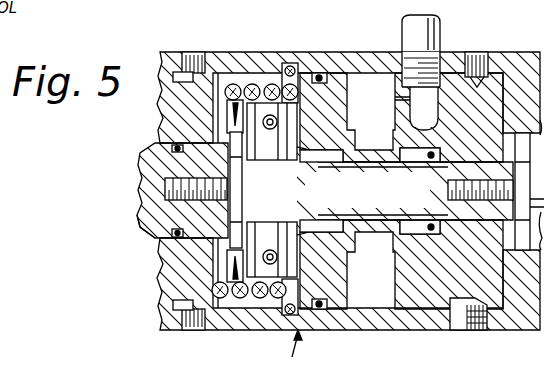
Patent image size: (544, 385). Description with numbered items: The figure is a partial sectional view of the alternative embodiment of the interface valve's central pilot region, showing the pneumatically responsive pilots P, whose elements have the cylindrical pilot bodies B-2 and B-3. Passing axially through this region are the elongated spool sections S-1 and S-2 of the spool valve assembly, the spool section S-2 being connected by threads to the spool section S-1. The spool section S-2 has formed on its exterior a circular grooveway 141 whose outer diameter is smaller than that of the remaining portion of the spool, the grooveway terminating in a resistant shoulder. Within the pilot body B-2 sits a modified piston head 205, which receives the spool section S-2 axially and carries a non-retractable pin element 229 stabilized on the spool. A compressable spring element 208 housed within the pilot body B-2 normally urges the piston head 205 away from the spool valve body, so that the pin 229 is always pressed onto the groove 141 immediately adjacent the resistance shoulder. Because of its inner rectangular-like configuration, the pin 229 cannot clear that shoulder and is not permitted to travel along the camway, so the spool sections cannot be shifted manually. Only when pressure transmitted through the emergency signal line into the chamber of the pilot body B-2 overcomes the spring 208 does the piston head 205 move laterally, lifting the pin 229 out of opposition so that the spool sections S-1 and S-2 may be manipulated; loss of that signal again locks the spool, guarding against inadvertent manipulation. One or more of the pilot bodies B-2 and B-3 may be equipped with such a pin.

The compressable spring element 208 is at (253, 84).
The piston head 205 is at (336, 80).
The pin element 229 is at (316, 217).
The spool section S-1 is at (140, 188).
The spool section S-2 is at (418, 201).
The circular grooveway 141 is at (140, 213).
The pneumatically responsive pilots P is at (289, 354).
The pilot body B-2 is at (402, 331).
The pilot body B-3 is at (507, 331).